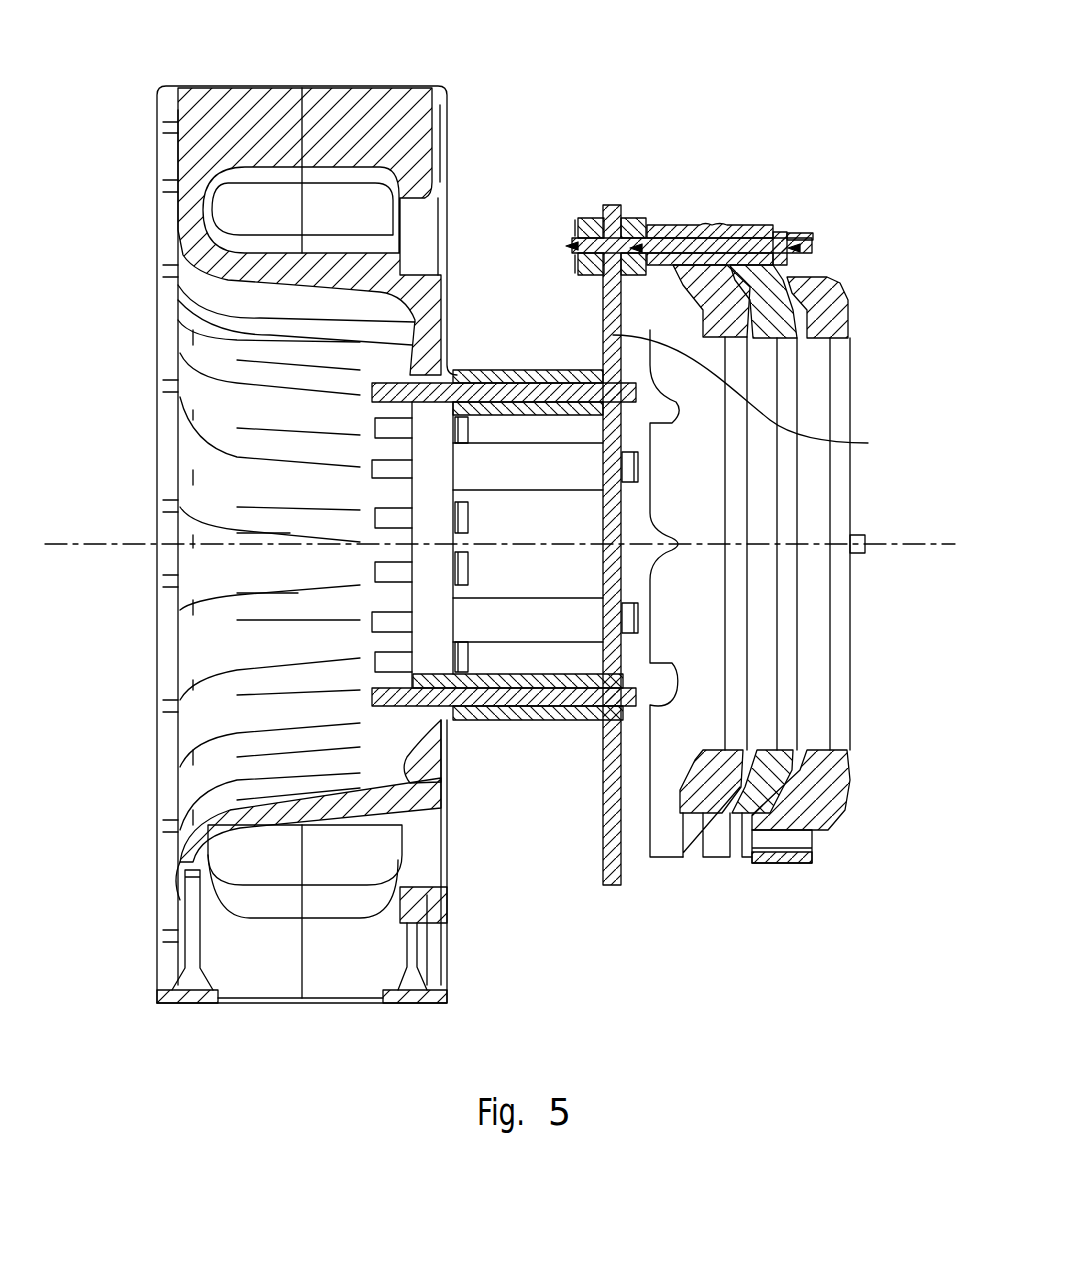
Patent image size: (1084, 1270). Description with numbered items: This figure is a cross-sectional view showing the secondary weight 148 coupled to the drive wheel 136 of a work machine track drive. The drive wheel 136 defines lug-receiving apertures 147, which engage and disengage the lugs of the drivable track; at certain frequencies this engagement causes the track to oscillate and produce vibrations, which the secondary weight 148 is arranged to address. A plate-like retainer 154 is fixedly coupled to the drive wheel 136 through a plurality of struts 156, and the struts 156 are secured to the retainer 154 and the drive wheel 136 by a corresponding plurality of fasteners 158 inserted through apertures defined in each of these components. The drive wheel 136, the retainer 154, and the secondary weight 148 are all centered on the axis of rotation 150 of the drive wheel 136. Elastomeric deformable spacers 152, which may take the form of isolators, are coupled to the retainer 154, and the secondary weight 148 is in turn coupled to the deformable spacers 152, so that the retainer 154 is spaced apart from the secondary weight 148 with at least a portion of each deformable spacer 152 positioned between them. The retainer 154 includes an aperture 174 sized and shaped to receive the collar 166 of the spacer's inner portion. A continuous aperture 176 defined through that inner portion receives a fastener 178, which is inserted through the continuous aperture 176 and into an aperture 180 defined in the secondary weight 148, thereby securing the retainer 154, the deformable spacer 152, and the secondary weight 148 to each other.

The drive wheel 136 is at (290, 105).
The lug-receiving apertures 147 is at (340, 848).
The secondary weight 148 is at (783, 337).
The axis of rotation 150 is at (100, 548).
The deformable spacers 152 is at (596, 215).
The retainer 154 is at (764, 395).
The struts 156 is at (497, 383).
The fasteners 158 is at (525, 395).
The collar 166 is at (630, 217).
The aperture 174 is at (695, 228).
The continuous aperture 176 is at (565, 246).
The fastener 178 is at (778, 238).
The aperture 180 is at (812, 243).